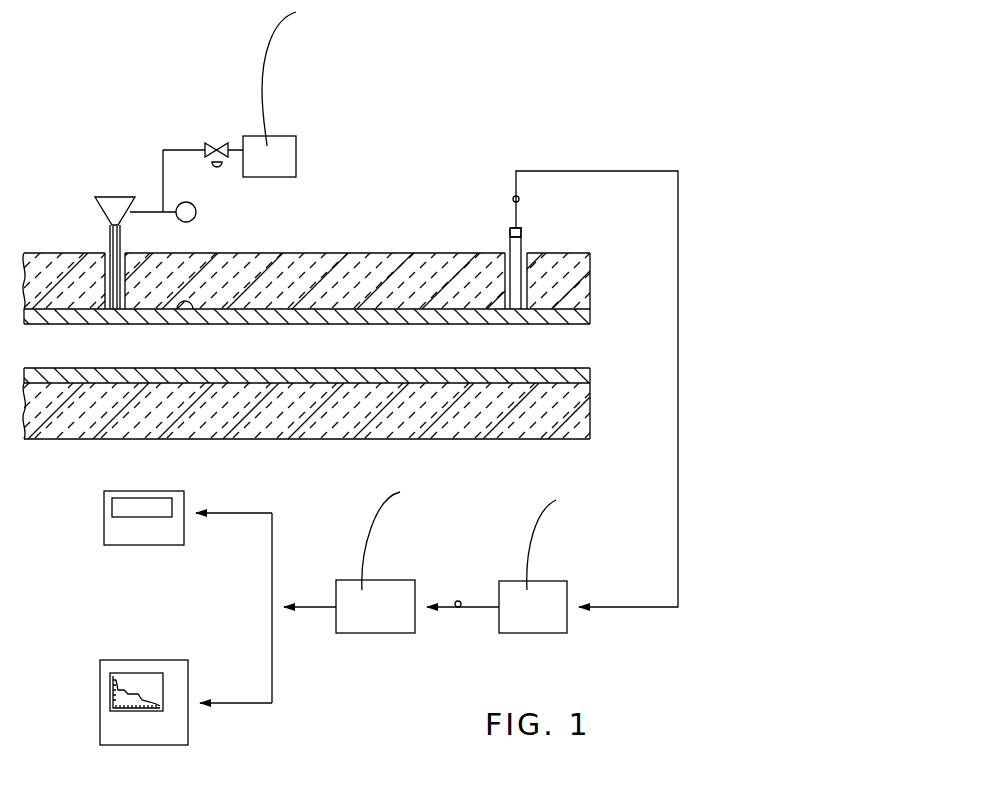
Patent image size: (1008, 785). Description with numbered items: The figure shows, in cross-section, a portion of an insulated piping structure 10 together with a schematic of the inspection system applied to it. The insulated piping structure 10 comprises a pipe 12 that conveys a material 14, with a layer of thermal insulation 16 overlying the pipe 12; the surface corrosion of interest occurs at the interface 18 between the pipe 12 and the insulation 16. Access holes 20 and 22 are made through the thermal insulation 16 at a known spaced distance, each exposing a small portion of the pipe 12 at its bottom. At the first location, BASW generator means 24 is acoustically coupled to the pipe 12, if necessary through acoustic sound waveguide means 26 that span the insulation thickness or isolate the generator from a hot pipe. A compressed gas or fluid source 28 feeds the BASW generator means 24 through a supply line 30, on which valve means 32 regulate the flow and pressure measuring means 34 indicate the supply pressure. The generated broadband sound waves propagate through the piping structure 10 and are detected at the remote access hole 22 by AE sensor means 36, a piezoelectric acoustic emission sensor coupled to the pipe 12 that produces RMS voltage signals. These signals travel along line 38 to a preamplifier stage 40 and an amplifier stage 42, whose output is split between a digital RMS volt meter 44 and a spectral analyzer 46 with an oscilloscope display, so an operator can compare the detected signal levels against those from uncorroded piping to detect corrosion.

The insulated piping structure 10 is at (398, 181).
The pipe 12 is at (95, 318).
The material 14 is at (180, 346).
The thermal insulation 16 is at (328, 262).
The interface 18 is at (190, 311).
The access hole 20 is at (124, 254).
The access hole 22 is at (525, 262).
The BASW generator means 24 is at (110, 219).
The acoustic sound waveguide means 26 is at (110, 243).
The compressed gas or fluid source 28 is at (288, 156).
The supply line 30 is at (184, 148).
The valve means 32 is at (202, 154).
The pressure measuring means 34 is at (197, 212).
The AE sensor means 36 is at (521, 232).
The line 38 is at (514, 199).
The preamplifier stage 40 is at (535, 588).
The amplifier stage 42 is at (376, 590).
The digital RMS volt meter 44 is at (175, 538).
The spectral analyzer 46 is at (180, 676).